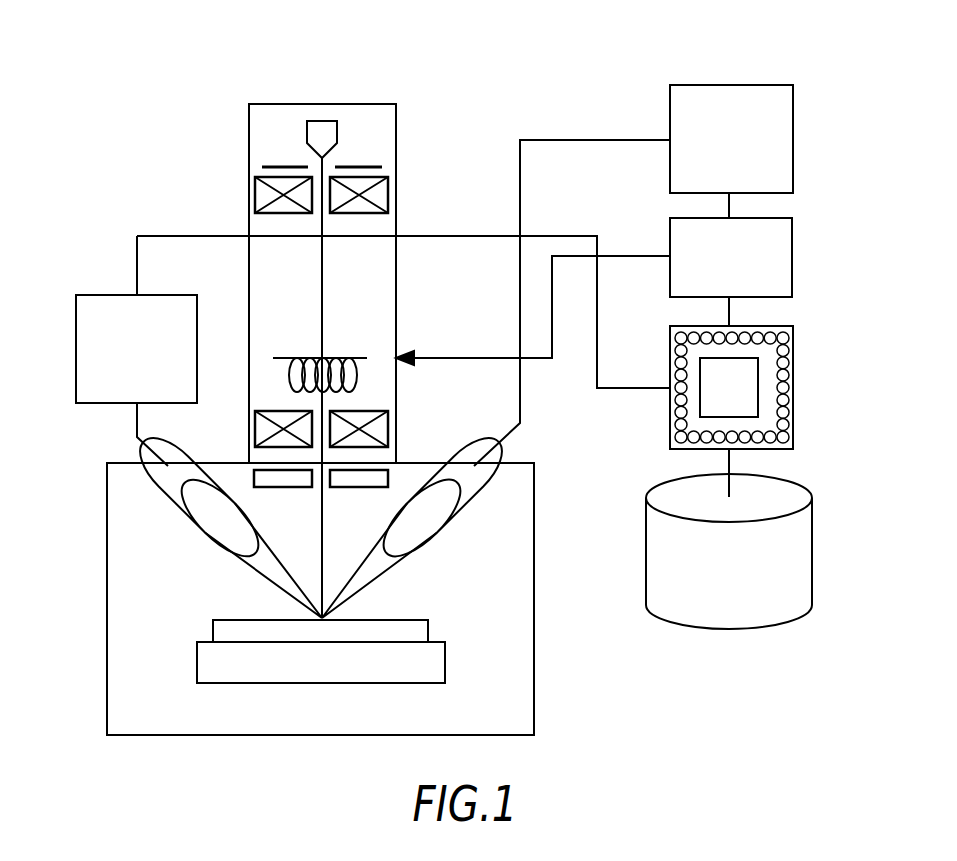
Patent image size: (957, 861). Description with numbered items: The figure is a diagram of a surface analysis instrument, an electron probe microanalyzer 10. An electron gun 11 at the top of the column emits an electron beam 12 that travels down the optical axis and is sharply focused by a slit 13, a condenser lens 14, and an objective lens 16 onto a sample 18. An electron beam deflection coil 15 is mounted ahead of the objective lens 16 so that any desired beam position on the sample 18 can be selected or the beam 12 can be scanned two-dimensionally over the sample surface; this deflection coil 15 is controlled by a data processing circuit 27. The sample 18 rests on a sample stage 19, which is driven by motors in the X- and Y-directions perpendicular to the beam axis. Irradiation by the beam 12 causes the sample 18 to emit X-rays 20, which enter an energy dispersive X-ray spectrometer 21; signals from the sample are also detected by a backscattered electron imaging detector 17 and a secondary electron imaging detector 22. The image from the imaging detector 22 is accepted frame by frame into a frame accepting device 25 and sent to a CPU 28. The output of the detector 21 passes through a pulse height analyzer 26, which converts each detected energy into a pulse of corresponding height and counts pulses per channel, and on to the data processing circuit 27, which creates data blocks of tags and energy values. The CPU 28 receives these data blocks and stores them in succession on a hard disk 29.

The electron probe microanalyzer 10 is at (526, 38).
The electron gun 11 is at (322, 121).
The electron beam 12 is at (326, 282).
The slit 13 is at (362, 165).
The condenser lens 14 is at (388, 200).
The electron beam deflection coil 15 is at (345, 358).
The objective lens 16 is at (388, 430).
The backscattered electron imaging detector 17 is at (254, 478).
The sample 18 is at (213, 628).
The sample stage 19 is at (197, 665).
The X-rays 20 is at (296, 585).
The energy dispersive X-ray spectrometer 21 is at (464, 508).
The secondary electron imaging detector 22 is at (177, 510).
The frame accepting device 25 is at (76, 330).
The pulse height analyzer 26 is at (793, 138).
The data processing circuit 27 is at (792, 251).
The CPU 28 is at (793, 367).
The hard disk 29 is at (813, 528).